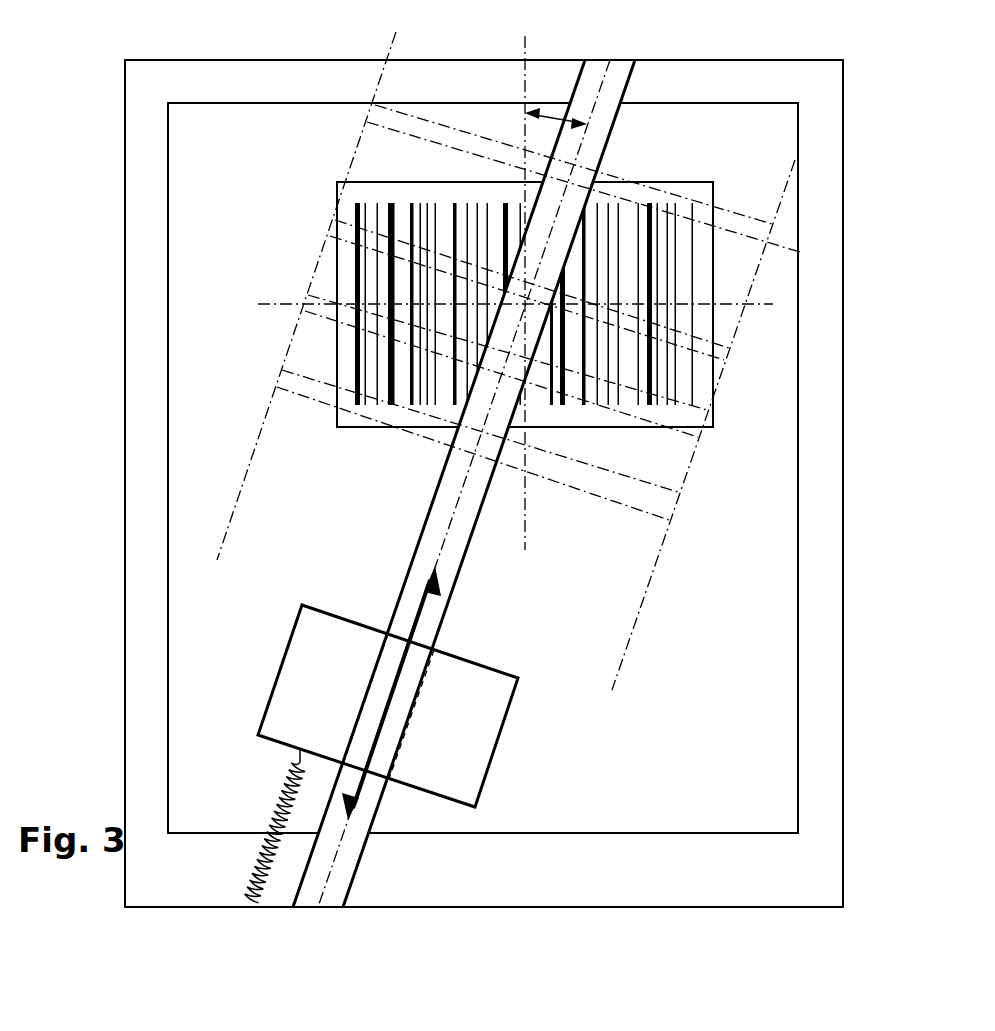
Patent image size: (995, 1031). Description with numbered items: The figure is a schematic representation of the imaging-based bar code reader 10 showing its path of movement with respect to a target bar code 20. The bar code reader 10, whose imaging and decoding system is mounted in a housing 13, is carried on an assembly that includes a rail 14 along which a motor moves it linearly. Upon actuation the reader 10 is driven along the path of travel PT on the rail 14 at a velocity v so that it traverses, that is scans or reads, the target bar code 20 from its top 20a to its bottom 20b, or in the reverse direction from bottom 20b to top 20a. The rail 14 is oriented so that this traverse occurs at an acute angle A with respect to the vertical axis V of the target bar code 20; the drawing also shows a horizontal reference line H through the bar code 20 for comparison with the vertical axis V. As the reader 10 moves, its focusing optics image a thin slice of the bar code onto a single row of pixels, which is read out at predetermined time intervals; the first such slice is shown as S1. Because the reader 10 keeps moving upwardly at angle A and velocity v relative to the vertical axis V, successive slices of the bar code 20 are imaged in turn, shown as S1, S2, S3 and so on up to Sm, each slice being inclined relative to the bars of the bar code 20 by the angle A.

The bar code reader 10 is at (372, 754).
The housing 13 is at (494, 748).
The rail 14 is at (452, 597).
The target bar code 20 is at (491, 295).
The top of target bar code 20a is at (394, 200).
The bottom of target bar code 20b is at (415, 406).
The path of travel PT is at (420, 607).
The m-th imaged slice of bar code Sm is at (800, 252).
The first imaged slice of bar code S1 is at (656, 506).
The second imaged slice of bar code S2 is at (678, 426).
The third imaged slice of bar code S3 is at (729, 348).
The horizontal axis H is at (281, 306).
The vertical axis of target bar code V is at (524, 36).
The acute angle A is at (563, 116).